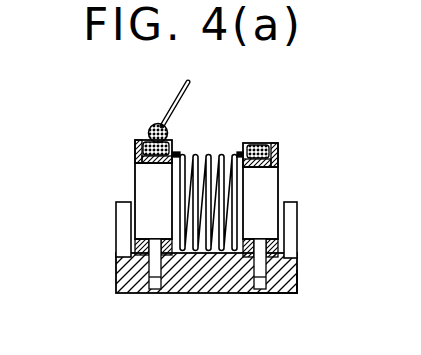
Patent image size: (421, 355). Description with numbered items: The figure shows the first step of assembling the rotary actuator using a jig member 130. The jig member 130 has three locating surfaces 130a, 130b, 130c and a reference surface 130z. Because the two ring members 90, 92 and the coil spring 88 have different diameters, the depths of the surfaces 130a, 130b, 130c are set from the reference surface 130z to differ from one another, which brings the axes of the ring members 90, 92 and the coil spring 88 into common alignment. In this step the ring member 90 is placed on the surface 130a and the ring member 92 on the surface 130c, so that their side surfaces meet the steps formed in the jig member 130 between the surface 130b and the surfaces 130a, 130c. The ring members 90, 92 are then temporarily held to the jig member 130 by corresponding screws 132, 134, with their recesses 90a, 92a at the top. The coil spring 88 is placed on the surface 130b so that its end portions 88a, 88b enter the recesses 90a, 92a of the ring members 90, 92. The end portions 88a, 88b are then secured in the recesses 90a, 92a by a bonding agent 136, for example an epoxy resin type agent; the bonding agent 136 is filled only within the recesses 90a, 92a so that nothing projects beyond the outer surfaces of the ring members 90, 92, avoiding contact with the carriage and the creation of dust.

The coil spring 88 is at (200, 154).
The end portion of the coil spring 88a is at (240, 148).
The end portion of the coil spring 88b is at (179, 151).
The ring member 90 is at (268, 178).
The recess of the ring member 90a is at (262, 142).
The ring member 92 is at (156, 188).
The recess of the ring member 92a is at (145, 139).
The jig member 130 is at (296, 281).
The surface of the jig member 130a is at (293, 256).
The surface of the jig member 130b is at (243, 245).
The surface of the jig member 130c is at (125, 260).
The reference surface 130z is at (287, 294).
The screw 132 is at (243, 262).
The screw 134 is at (164, 262).
The bonding agent 136 is at (153, 128).